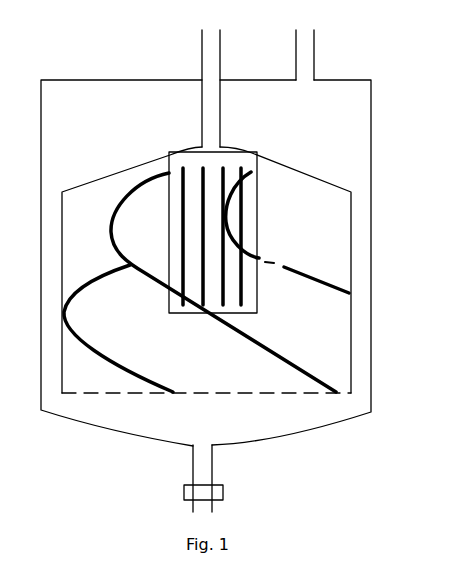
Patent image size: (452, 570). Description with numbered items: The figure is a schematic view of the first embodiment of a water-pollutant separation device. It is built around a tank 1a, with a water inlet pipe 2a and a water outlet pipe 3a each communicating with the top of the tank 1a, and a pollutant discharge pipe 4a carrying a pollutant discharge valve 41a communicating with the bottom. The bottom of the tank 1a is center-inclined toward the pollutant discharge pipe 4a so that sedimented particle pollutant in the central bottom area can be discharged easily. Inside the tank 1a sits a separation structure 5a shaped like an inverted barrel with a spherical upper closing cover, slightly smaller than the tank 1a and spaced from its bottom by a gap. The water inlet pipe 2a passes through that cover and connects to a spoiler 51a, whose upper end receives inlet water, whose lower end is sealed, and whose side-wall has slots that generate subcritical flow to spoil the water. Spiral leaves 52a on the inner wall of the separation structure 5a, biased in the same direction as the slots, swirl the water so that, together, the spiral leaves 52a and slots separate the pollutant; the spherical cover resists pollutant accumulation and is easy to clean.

The tank 1a is at (371, 98).
The water inlet pipe 2a is at (207, 57).
The water outlet pipe 3a is at (306, 59).
The pollutant discharge pipe 4a is at (213, 465).
The pollutant discharge valve 41a is at (213, 497).
The separation structure 5a is at (302, 168).
The spoiler 51a is at (251, 227).
The spiral leaves 52a is at (269, 352).